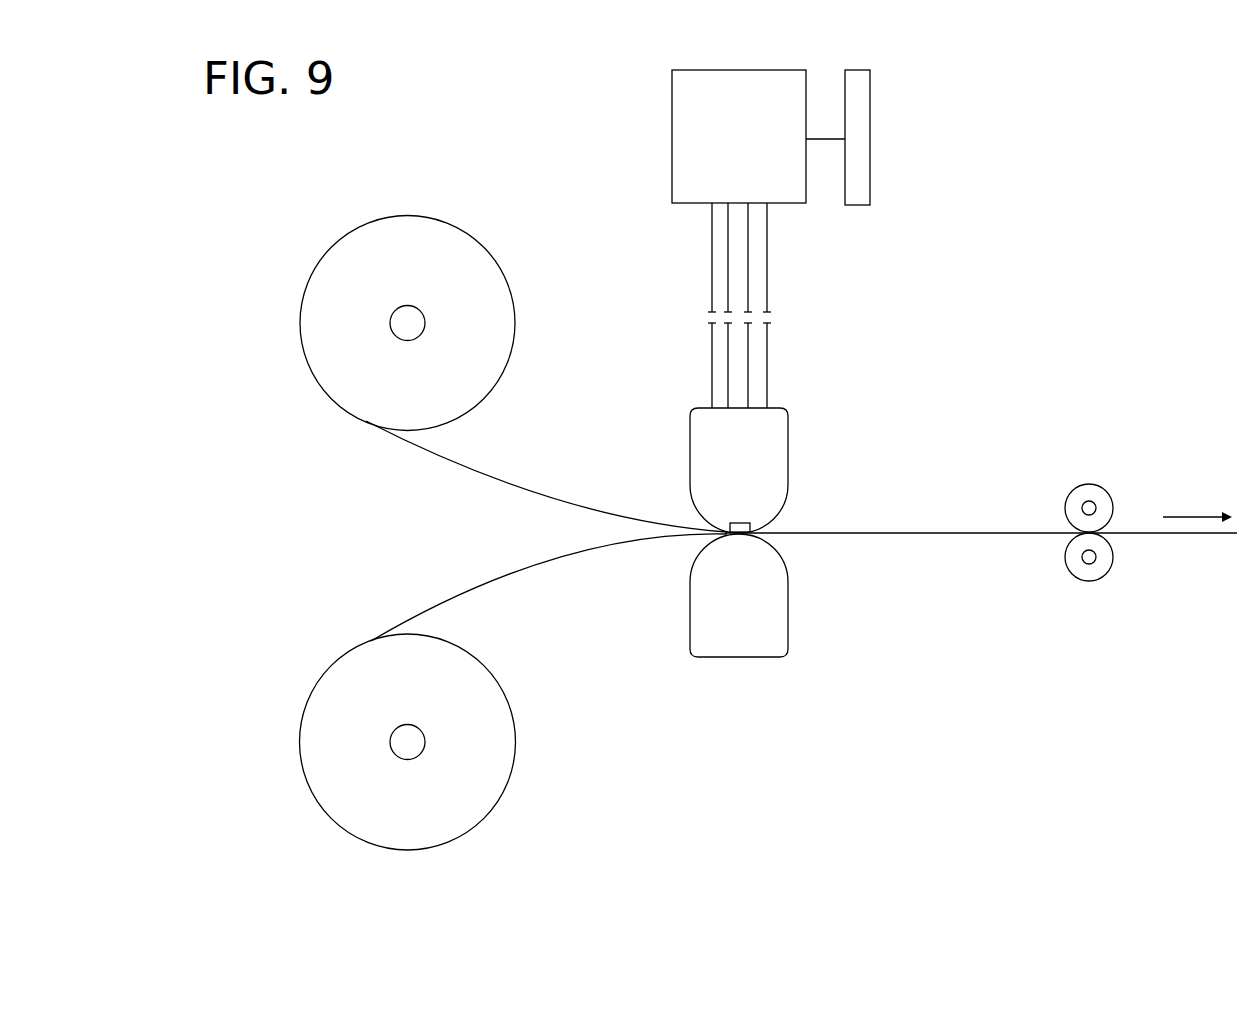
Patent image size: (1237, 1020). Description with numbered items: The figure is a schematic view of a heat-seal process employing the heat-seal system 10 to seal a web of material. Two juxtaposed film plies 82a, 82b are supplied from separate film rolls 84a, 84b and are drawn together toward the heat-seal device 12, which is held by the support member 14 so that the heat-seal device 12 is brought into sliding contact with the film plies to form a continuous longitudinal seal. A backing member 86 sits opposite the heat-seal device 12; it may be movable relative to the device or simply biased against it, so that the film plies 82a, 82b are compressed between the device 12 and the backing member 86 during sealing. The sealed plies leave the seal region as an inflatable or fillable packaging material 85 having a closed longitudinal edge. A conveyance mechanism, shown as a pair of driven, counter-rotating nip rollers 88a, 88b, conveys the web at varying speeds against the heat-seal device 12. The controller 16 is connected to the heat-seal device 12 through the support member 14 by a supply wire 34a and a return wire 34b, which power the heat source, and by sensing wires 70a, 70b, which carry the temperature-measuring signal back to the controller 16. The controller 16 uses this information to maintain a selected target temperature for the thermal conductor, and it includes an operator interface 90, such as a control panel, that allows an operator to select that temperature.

The heat-seal system 10 is at (563, 149).
The controller 16 is at (682, 113).
The operator interface 90 is at (872, 118).
The supply wire 34a is at (768, 363).
The return wire 34b is at (711, 248).
The sensing wire 70a is at (749, 268).
The sensing wire 70b is at (727, 352).
The support member 14 is at (702, 440).
The heat-seal device 12 is at (741, 519).
The backing member 86 is at (778, 606).
The packaging material 85 is at (938, 530).
The film roll 84a is at (320, 260).
The film roll 84b is at (308, 703).
The film ply 82a is at (522, 489).
The film ply 82b is at (525, 572).
The nip roller 88a is at (1088, 484).
The nip roller 88b is at (1090, 582).